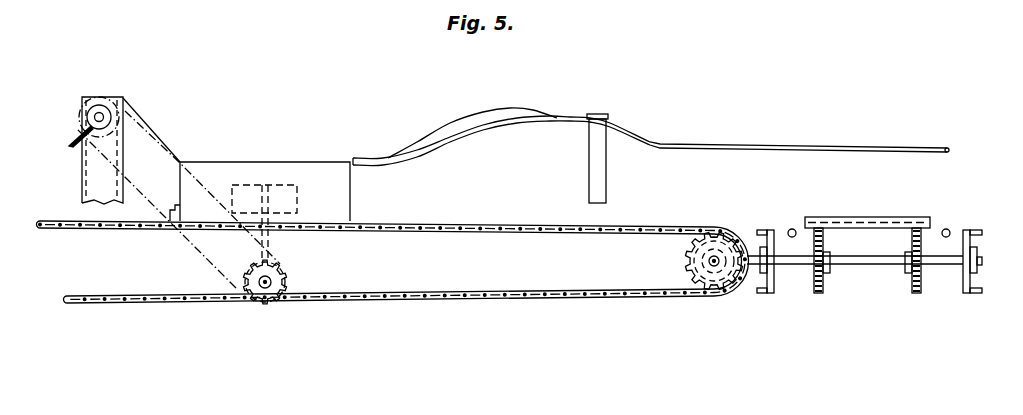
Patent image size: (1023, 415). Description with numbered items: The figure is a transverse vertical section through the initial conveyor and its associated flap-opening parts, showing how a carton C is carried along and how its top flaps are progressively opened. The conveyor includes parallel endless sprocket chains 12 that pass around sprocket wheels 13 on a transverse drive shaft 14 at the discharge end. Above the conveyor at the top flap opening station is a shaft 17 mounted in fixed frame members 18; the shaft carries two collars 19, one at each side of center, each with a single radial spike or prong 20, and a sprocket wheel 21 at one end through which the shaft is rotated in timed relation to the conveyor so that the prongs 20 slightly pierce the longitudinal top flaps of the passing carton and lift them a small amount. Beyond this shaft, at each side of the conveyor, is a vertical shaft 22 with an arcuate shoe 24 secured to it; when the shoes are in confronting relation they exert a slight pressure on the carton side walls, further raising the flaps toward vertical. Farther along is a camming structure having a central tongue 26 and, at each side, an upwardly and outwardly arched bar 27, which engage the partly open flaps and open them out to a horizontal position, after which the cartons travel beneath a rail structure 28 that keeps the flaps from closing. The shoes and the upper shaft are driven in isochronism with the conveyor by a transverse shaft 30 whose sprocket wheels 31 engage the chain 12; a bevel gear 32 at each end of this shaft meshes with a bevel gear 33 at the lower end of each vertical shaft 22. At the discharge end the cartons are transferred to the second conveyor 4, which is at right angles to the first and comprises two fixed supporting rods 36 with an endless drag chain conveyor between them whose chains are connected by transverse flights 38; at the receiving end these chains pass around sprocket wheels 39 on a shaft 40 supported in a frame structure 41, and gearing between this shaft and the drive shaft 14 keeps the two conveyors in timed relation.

The second conveyor 4 is at (960, 164).
The endless sprocket chains 12 is at (470, 223).
The sprocket wheels 13 is at (687, 257).
The transverse drive shaft 14 is at (710, 263).
The shaft 17 is at (101, 116).
The fixed frame members 18 is at (82, 173).
The collars 19 is at (88, 114).
The spike or prong 20 is at (75, 138).
The sprocket wheel 21 is at (103, 95).
The vertical shaft 22 is at (270, 184).
The arcuate shoe 24 is at (301, 190).
The central tongue 26 is at (488, 135).
The arched bar 27 is at (472, 112).
The rail structure 28 is at (602, 114).
The transverse shaft 30 is at (282, 271).
The sprocket wheels 31 is at (288, 283).
The bevel gear 32 is at (240, 283).
The bevel gear 33 is at (252, 261).
The fixed supporting rods or bars 36 is at (792, 229).
The transverse flights 38 is at (857, 217).
The sprocket wheels 39 is at (913, 282).
The shaft 40 is at (796, 264).
The frame structure 41 is at (758, 245).
The carton C is at (353, 187).